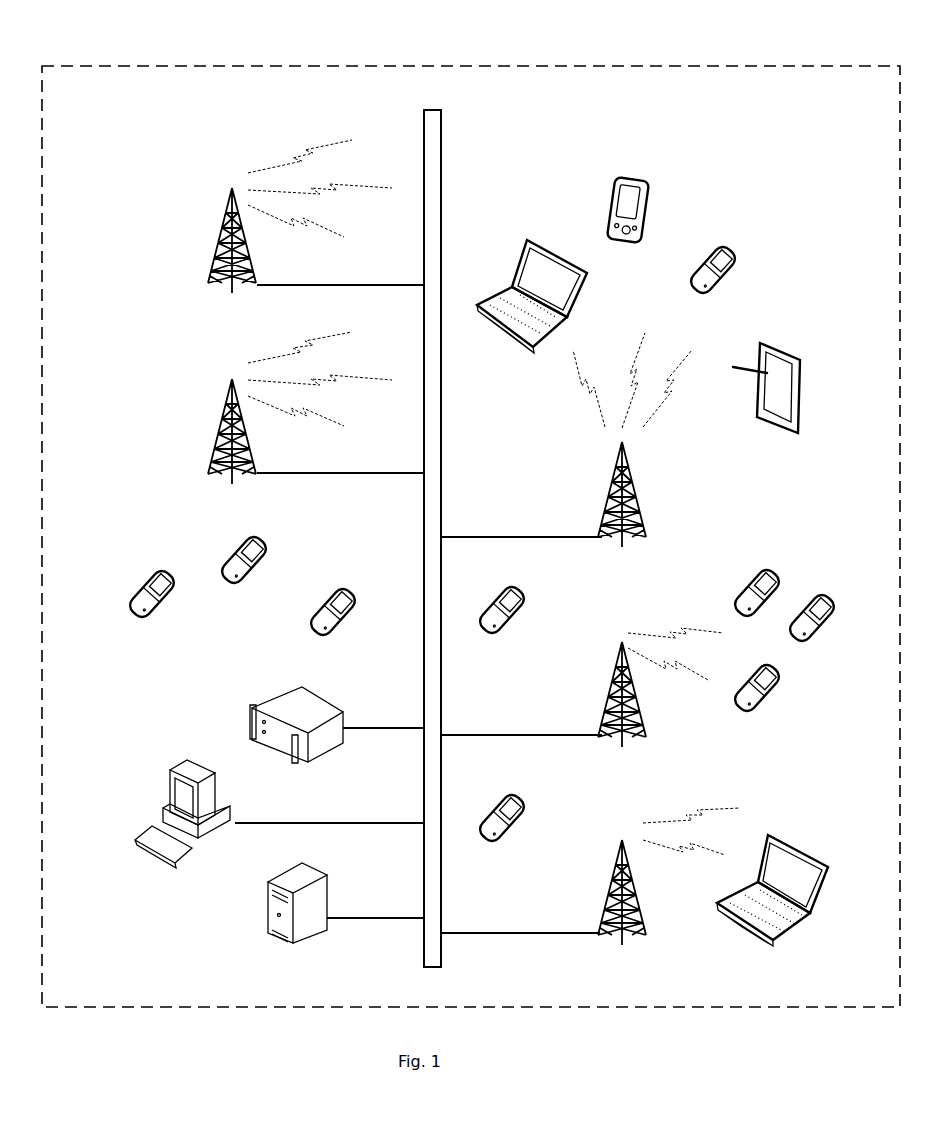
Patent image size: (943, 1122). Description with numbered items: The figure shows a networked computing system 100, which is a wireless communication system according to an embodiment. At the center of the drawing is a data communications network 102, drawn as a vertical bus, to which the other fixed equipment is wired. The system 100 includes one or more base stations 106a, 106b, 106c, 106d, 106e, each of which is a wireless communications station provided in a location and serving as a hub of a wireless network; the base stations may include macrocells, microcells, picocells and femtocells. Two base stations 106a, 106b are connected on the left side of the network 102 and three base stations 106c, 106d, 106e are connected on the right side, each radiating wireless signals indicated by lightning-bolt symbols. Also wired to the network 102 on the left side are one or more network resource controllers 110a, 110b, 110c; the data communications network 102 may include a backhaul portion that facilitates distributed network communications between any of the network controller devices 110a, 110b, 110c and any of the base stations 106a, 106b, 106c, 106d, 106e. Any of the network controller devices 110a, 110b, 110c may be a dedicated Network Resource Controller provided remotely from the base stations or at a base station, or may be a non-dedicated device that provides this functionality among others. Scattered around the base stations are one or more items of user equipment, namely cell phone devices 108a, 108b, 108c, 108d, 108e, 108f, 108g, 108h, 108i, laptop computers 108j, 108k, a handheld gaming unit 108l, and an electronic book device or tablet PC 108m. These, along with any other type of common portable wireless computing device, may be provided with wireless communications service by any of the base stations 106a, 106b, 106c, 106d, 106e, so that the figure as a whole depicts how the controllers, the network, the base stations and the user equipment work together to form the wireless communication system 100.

The networked computing system 100 is at (328, 36).
The data communications network 102 is at (424, 126).
The base station 106a is at (222, 240).
The base station 106b is at (222, 430).
The base station 106c is at (612, 880).
The base station 106d is at (605, 690).
The base station 106e is at (640, 507).
The cell phone device 108a is at (140, 588).
The cell phone device 108b is at (236, 545).
The cell phone device 108c is at (314, 630).
The cell phone device 108d is at (528, 798).
The cell phone device 108e is at (768, 706).
The cell phone device 108f is at (826, 633).
The cell phone device 108g is at (780, 573).
The cell phone device 108h is at (528, 590).
The cell phone device 108i is at (745, 255).
The laptop computer 108j is at (793, 846).
The laptop computer 108k is at (530, 244).
The handheld gaming unit 108l is at (649, 197).
The electronic book device or tablet PC 108m is at (800, 356).
The network resource controller 110a is at (250, 728).
The network resource controller 110b is at (168, 770).
The network resource controller 110c is at (266, 924).